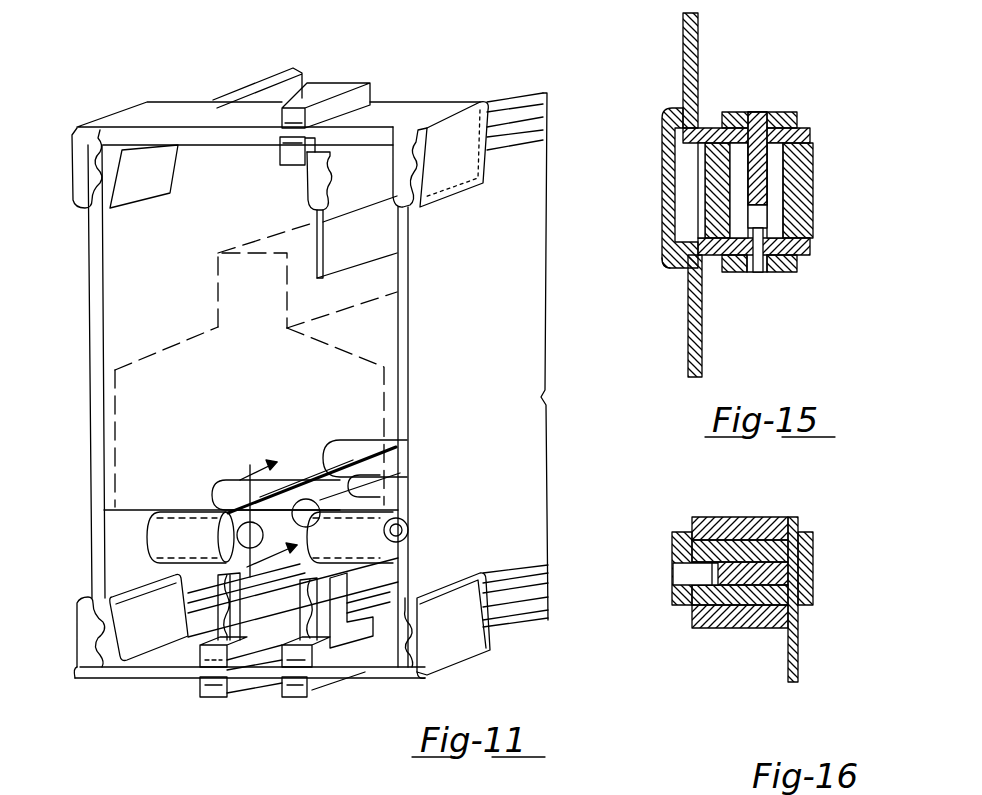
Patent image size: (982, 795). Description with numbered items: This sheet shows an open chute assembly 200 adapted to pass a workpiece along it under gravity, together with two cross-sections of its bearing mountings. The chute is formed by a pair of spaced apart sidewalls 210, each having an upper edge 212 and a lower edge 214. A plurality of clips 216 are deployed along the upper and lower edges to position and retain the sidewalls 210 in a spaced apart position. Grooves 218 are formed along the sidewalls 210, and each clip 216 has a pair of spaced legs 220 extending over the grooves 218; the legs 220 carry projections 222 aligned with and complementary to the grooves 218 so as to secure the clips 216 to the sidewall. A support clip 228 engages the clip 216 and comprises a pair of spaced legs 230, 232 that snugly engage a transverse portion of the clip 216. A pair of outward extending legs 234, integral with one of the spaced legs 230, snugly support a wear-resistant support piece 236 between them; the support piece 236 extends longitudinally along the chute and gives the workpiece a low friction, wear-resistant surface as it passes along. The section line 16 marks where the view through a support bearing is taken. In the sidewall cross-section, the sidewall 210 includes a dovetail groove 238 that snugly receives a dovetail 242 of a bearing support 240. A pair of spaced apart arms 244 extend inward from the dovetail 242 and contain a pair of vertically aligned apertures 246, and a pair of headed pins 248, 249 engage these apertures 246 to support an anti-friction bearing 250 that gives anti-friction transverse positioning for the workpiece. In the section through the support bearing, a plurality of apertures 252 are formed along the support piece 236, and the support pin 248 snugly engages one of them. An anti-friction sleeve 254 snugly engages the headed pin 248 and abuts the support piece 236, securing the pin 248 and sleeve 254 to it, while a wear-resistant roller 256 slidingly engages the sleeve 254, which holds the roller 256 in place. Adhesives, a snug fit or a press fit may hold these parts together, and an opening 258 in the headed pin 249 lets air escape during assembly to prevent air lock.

In FIG. 11, the open chute assembly 200 is at (538, 70).
In FIG. 11, the sidewall 210 is at (130, 299).
In FIG. 15, the sidewall 210 is at (698, 50).
In FIG. 11, the upper edge 212 is at (77, 128).
In FIG. 11, the lower edge 214 is at (95, 682).
In FIG. 11, the clip 216 is at (162, 108).
In FIG. 11, the groove 218 is at (85, 598).
In FIG. 11, the leg 220 is at (83, 673).
In FIG. 11, the projection 222 is at (123, 603).
In FIG. 11, the support clip 228 is at (287, 713).
In FIG. 11, the spaced leg 230 is at (338, 640).
In FIG. 11, the spaced leg 232 is at (312, 687).
In FIG. 11, the outward extending leg 234 is at (223, 616).
In FIG. 11, the wear-resistant support piece 236 is at (323, 490).
In FIG. 16, the wear-resistant support piece 236 is at (790, 647).
In FIG. 15, the dovetail groove 238 is at (680, 207).
In FIG. 15, the bearing support 240 is at (708, 270).
In FIG. 15, the dovetail 242 is at (660, 272).
In FIG. 15, the arm 244 is at (800, 130).
In FIG. 15, the aperture 246 is at (757, 117).
In FIG. 15, the headed pin 248 is at (727, 112).
In FIG. 16, the headed pin 248 is at (810, 603).
In FIG. 15, the headed pin 249 is at (745, 273).
In FIG. 16, the headed pin 249 is at (670, 537).
In FIG. 15, the anti-friction bearing 250 is at (694, 164).
In FIG. 16, the anti-friction bearing 250 is at (642, 580).
In FIG. 16, the aperture 252 is at (805, 565).
In FIG. 16, the anti-friction sleeve 254 is at (693, 617).
In FIG. 16, the wear-resistant roller 256 is at (727, 630).
In FIG. 16, the opening 258 is at (680, 587).
In FIG. 11, the section line 16— 16 is at (271, 502).